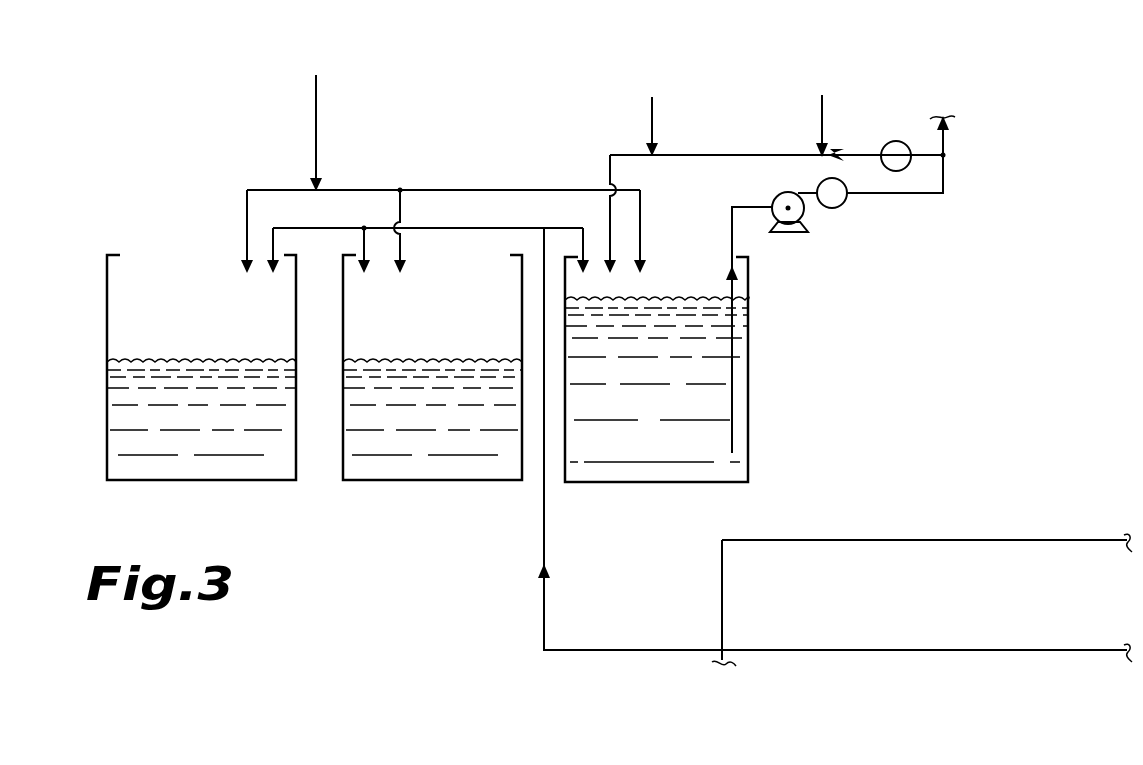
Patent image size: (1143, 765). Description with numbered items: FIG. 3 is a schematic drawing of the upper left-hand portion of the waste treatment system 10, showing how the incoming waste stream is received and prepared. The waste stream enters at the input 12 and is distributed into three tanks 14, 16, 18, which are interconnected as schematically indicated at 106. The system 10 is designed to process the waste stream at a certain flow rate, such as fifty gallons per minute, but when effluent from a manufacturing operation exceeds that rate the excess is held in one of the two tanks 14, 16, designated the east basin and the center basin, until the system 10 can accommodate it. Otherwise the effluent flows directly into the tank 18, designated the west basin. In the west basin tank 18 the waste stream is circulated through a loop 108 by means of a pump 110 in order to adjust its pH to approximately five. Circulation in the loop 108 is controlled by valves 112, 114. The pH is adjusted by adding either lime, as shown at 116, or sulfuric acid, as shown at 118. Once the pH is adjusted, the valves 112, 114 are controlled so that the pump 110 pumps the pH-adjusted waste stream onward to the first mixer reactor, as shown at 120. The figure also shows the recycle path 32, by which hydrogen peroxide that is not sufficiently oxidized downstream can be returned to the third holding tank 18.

The system 10 is at (932, 90).
The waste stream input 12 is at (316, 112).
The east basin tank 14 is at (107, 432).
The center basin tank 16 is at (343, 462).
The west basin tank 18 is at (750, 448).
The recycle line 32 is at (616, 650).
The tank interconnection 106 is at (468, 228).
The circulation loop 108 is at (728, 150).
The pump 110 is at (812, 216).
The valve 112 is at (848, 204).
The valve 114 is at (901, 141).
The lime addition 116 is at (650, 108).
The sulfuric acid addition 118 is at (824, 116).
The pH-adjusted waste stream outlet 120 is at (946, 144).